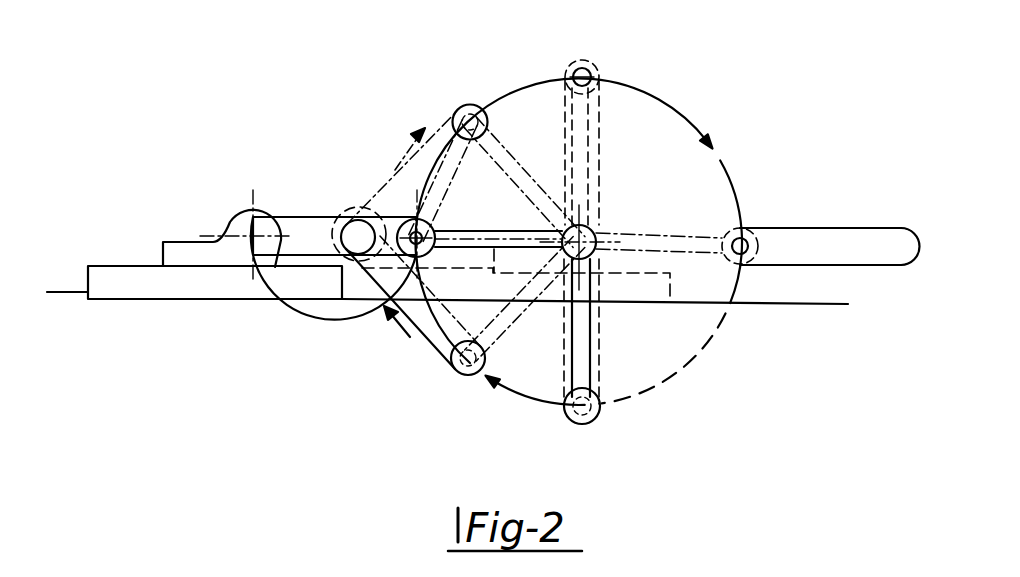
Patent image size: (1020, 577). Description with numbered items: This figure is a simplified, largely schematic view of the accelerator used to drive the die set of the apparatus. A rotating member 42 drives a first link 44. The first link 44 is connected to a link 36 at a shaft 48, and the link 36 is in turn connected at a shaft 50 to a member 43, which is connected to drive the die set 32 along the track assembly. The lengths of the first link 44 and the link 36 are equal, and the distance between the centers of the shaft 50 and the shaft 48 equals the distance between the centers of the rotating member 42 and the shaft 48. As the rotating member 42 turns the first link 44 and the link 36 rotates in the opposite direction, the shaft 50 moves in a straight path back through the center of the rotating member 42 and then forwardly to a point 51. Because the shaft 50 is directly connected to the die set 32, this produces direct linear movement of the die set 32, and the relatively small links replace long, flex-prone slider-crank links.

The die set 32 is at (103, 273).
The member 43 is at (192, 252).
The shaft 50 is at (257, 228).
The link 36 is at (314, 228).
The shaft 48 is at (388, 190).
The rotating member 42 is at (597, 228).
The first link 44 is at (487, 235).
The point 51 is at (870, 236).